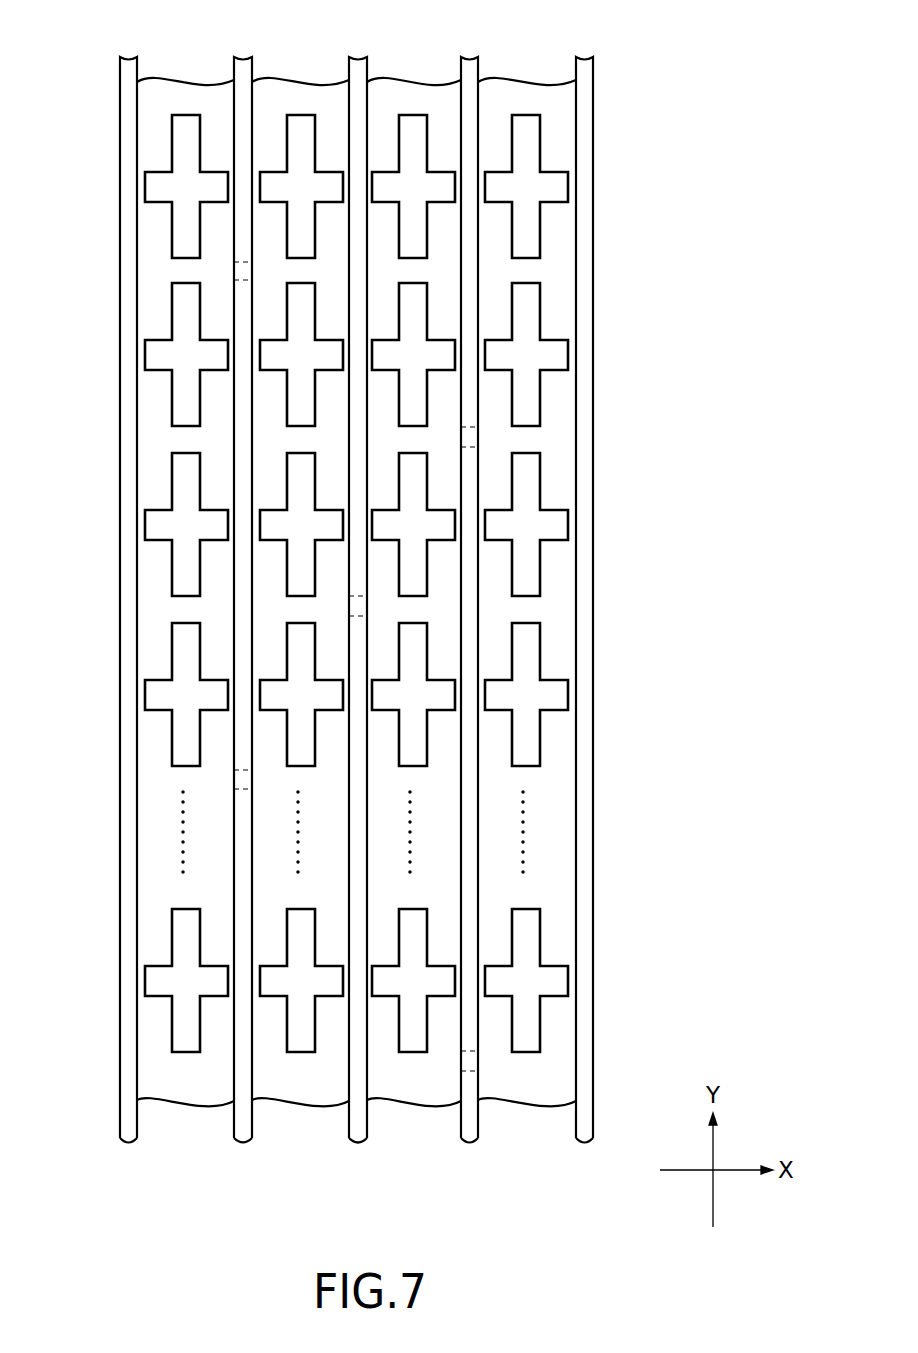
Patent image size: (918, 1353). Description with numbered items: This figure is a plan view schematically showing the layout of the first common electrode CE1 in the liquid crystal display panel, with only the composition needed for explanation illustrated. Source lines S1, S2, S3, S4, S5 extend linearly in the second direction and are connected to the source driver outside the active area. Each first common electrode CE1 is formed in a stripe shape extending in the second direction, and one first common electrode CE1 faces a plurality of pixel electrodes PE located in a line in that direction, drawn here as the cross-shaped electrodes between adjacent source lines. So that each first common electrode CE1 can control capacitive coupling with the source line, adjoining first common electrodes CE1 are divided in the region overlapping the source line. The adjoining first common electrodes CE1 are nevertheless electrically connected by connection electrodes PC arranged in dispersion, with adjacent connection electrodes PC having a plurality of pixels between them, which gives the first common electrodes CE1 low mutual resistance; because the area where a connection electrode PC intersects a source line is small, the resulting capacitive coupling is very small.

The source line S1 is at (128, 55).
The source line S2 is at (242, 55).
The source line S3 is at (356, 55).
The source line S4 is at (467, 55).
The source line S5 is at (584, 55).
The pixel electrode PE is at (186, 115).
The connection electrode PC is at (233, 272).
The first common electrode CE1 is at (182, 1106).